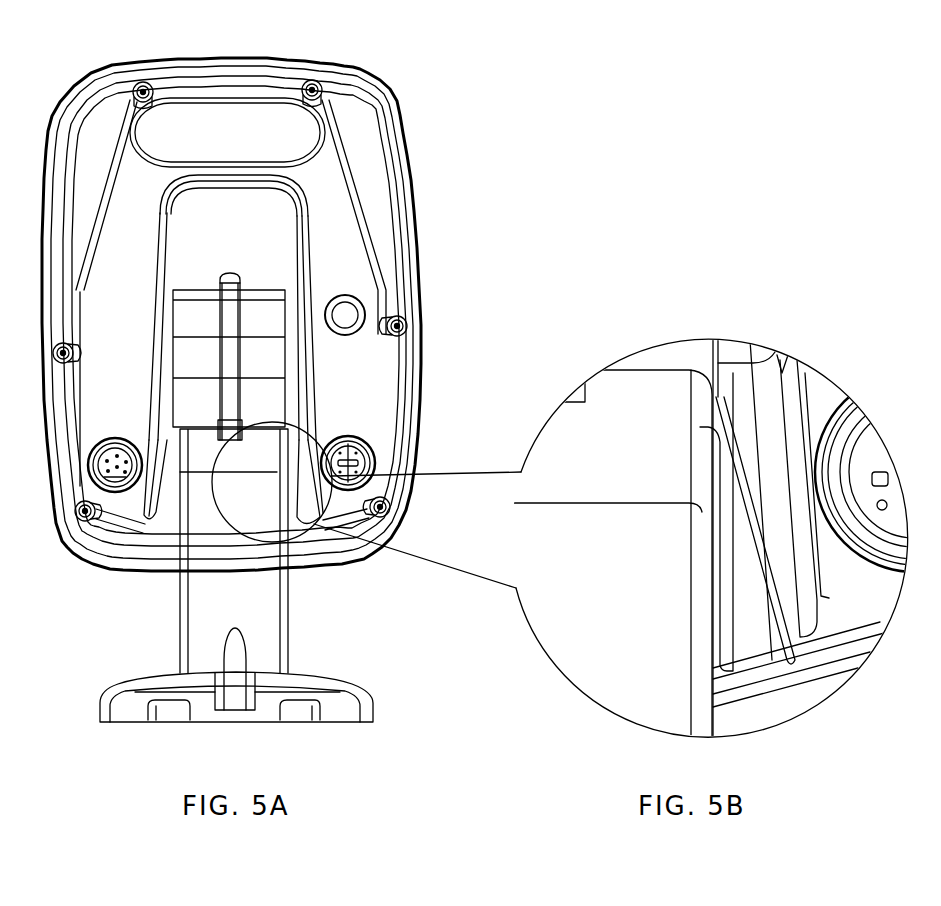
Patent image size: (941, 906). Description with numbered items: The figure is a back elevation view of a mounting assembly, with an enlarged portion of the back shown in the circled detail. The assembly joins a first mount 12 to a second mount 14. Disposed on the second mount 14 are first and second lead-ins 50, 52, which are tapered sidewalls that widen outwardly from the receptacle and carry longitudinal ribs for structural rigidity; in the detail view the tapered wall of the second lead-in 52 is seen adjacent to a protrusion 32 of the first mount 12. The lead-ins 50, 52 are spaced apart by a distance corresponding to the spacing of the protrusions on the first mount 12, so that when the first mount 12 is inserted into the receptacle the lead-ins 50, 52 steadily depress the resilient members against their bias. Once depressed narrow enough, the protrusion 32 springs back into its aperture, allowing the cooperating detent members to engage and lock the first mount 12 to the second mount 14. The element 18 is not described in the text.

In FIG. 5A, the first mount 12 is at (291, 621).
In FIG. 5A, the second mount 14 is at (262, 222).
In FIG. 5A, the channel side walls 18 is at (175, 310).
In FIG. 5B, the protrusion 32 is at (724, 456).
In FIG. 5A, the first lead-in 50 is at (166, 507).
In FIG. 5A, the second lead-in 52 is at (298, 495).
In FIG. 5B, the second lead-in 52 is at (764, 566).